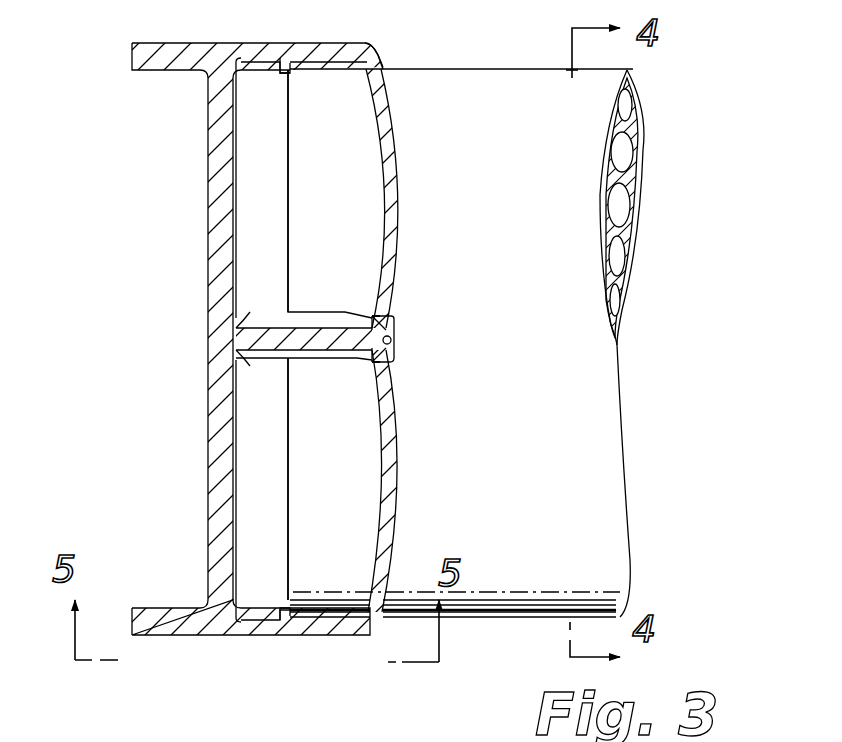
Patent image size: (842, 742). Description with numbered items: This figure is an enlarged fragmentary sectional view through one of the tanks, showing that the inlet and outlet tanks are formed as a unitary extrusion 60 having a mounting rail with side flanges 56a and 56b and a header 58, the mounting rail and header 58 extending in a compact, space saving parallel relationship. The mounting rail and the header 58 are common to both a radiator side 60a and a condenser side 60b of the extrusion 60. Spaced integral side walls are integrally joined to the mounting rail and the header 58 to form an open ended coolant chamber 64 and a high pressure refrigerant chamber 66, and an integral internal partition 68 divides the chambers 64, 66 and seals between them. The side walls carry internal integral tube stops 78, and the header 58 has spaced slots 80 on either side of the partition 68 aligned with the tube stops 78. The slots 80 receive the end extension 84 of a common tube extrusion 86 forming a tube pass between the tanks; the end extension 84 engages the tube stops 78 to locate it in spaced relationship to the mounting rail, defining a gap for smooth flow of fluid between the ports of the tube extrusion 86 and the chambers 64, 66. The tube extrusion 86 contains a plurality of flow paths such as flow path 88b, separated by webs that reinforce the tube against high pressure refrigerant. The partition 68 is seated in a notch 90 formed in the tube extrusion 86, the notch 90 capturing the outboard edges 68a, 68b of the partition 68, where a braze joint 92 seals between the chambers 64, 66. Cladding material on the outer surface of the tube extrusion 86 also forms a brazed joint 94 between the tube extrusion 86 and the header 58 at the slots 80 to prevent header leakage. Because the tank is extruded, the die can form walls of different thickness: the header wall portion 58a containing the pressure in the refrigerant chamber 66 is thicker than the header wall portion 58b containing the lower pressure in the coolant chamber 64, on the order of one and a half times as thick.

The side flange 56a is at (153, 627).
The side flange 56b is at (215, 82).
The header 58 is at (448, 340).
The header wall portion 58a is at (396, 468).
The header wall portion 58b is at (396, 174).
The unitary extrusion 60 is at (166, 340).
The radiator side 60a is at (221, 154).
The condenser side 60b is at (222, 488).
The coolant chamber 64 is at (352, 165).
The refrigerant chamber 66 is at (352, 493).
The internal partition 68 is at (311, 342).
The outboard edge 68a is at (335, 316).
The outboard edge 68b is at (340, 356).
The tube stop 78 is at (283, 78).
The slot 80 is at (375, 72).
The end extension 84 is at (320, 214).
The common tube extrusion 86 is at (550, 33).
The flow path 88b is at (633, 136).
The notch 90 is at (394, 345).
The braze joint 92 is at (394, 324).
The brazed joint 94 is at (377, 621).